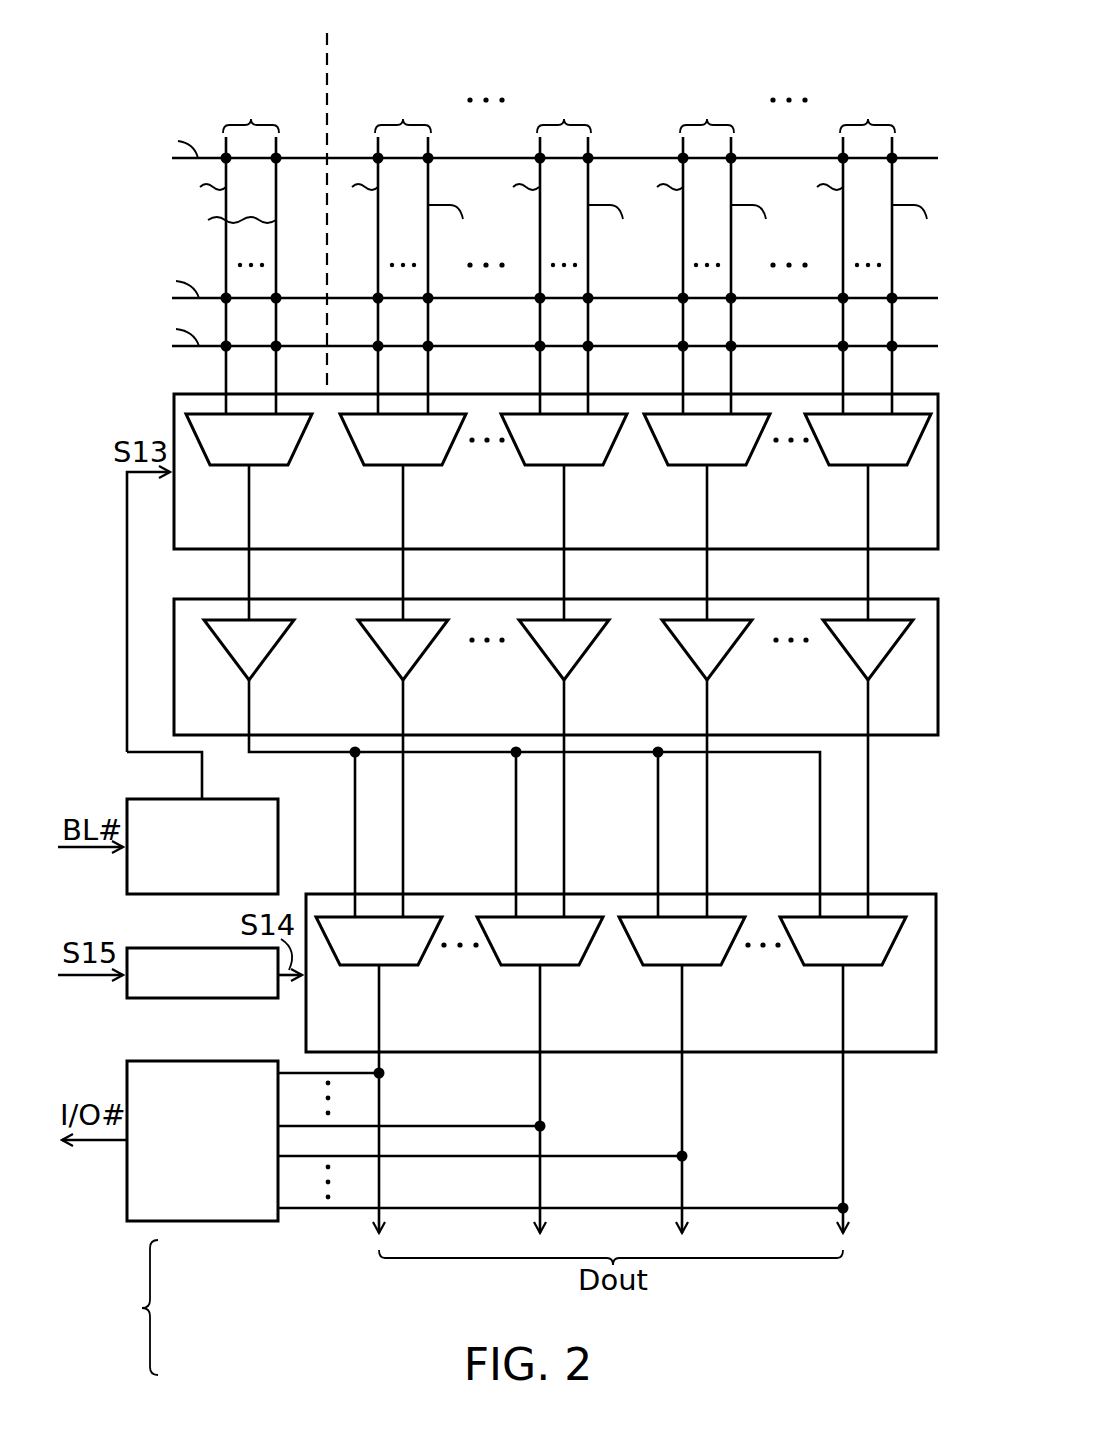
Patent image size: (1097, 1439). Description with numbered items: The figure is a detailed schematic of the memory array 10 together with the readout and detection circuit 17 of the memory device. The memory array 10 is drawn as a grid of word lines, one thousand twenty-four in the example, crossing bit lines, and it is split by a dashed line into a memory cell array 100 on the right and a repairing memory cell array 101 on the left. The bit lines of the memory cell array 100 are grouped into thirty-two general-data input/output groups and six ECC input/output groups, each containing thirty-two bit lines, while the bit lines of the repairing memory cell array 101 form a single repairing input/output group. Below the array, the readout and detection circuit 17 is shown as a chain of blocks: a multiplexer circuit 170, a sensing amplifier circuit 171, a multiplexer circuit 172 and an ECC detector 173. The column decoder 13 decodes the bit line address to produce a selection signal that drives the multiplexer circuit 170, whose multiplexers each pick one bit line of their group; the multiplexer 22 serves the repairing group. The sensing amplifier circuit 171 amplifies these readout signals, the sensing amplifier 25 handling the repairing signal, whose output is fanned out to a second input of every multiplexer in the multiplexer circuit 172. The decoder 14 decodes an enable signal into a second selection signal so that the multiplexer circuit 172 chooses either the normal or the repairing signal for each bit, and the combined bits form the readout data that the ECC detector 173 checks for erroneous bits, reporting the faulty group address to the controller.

The memory array 10 is at (138, 80).
The memory cell array 100 is at (333, 57).
The repairing memory cell array 101 is at (322, 57).
The column decoder 13 is at (250, 799).
The decoder 14 is at (128, 948).
The readout and detection circuit 17 is at (160, 1307).
The multiplexer circuit 170 is at (199, 394).
The sensing amplifier circuit 171 is at (175, 599).
The multiplexer circuit 172 is at (428, 894).
The ECC detector 173 is at (128, 1061).
The multiplexer 22 is at (232, 466).
The sensing amplifier 25 is at (227, 653).